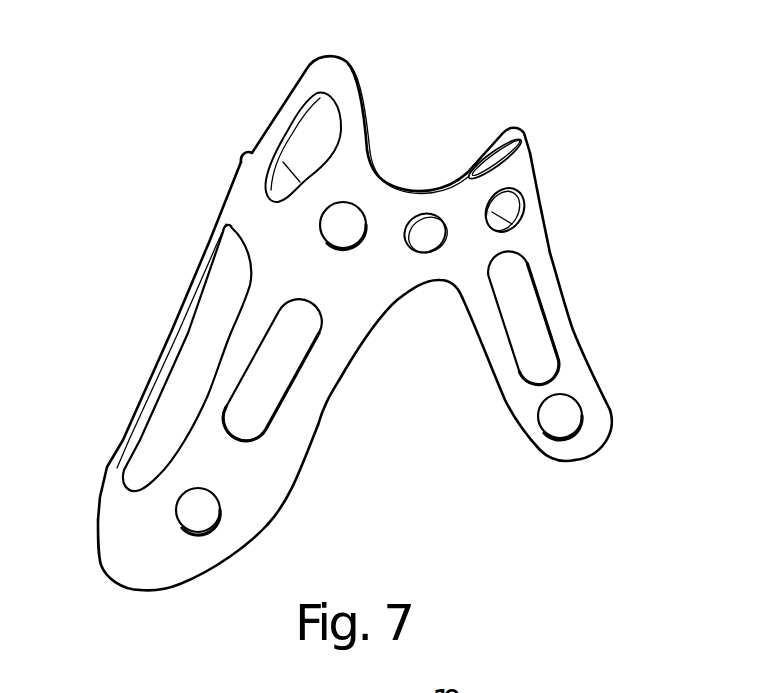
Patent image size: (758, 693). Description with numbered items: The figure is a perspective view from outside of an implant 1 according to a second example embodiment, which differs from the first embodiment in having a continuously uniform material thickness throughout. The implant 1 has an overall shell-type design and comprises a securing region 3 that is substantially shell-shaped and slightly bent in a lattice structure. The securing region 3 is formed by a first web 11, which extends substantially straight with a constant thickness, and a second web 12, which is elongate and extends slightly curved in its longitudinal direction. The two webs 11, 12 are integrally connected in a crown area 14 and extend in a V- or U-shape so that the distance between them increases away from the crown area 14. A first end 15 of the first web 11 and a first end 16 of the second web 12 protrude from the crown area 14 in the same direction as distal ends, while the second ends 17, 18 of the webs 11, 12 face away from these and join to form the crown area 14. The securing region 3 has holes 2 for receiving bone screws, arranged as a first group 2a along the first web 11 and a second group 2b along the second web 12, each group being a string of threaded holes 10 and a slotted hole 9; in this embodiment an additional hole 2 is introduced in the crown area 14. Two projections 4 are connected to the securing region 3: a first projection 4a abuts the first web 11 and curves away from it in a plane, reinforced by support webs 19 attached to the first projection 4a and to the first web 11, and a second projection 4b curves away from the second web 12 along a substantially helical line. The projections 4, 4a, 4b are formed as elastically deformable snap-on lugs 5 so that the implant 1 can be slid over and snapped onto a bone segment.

The implant 1 is at (605, 207).
The holes for receiving securing means 2 is at (455, 386).
The first group of holes 2a is at (182, 604).
The second group of holes 2b is at (610, 442).
The securing region 3 is at (330, 360).
The projections 4 is at (392, 117).
The first projection 4a is at (285, 180).
The second projection 4b is at (507, 147).
The snap-on lugs 5 is at (392, 117).
The slotted hole 9 is at (523, 320).
The threaded hole 10 is at (500, 228).
The first web 11 is at (228, 469).
The second web 12 is at (546, 272).
The crown area 14 is at (422, 202).
The first end of the first web 15 is at (98, 590).
The first end of the second web 16 is at (592, 460).
The second end of the first web 17 is at (262, 210).
The second end of the second web 18 is at (547, 189).
The support webs 19 is at (343, 72).